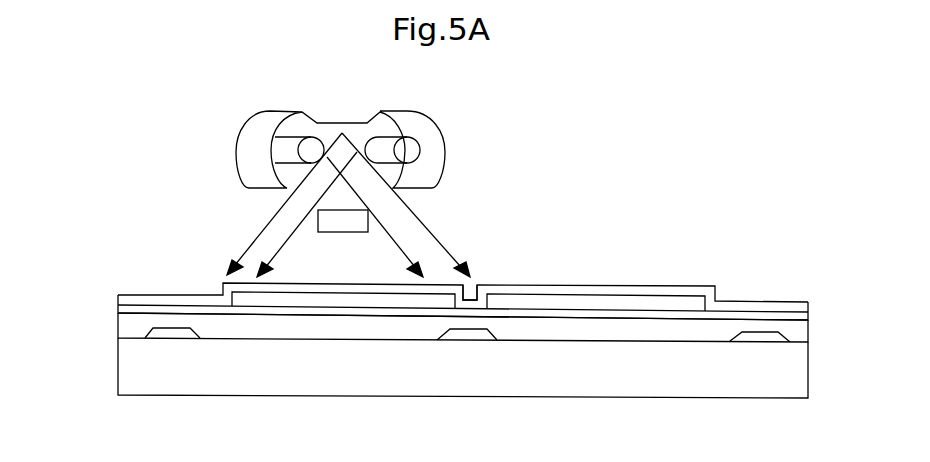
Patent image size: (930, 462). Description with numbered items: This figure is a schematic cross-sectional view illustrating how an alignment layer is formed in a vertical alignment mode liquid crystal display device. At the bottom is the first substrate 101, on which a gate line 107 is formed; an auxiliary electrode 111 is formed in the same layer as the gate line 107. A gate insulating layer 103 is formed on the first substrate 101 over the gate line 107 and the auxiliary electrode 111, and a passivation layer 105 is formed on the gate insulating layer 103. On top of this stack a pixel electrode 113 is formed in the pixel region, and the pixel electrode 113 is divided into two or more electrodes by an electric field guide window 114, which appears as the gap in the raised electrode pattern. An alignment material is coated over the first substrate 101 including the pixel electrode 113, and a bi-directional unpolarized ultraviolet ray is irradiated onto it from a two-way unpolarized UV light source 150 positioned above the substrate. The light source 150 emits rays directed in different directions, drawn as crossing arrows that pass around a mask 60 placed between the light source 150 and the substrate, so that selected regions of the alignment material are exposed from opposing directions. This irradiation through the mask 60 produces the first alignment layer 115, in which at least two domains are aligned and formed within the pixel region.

The 2-way unpolarized UV light source 150 is at (443, 140).
The mask 60 is at (345, 232).
The electric field guide window 114 is at (480, 289).
The first alignment layer 115 is at (660, 291).
The pixel electrode 113 is at (250, 298).
The passivation layer 105 is at (118, 311).
The gate insulating layer 103 is at (800, 324).
The gate line 107 is at (170, 333).
The auxiliary electrode 111 is at (471, 333).
The first substrate 101 is at (797, 380).